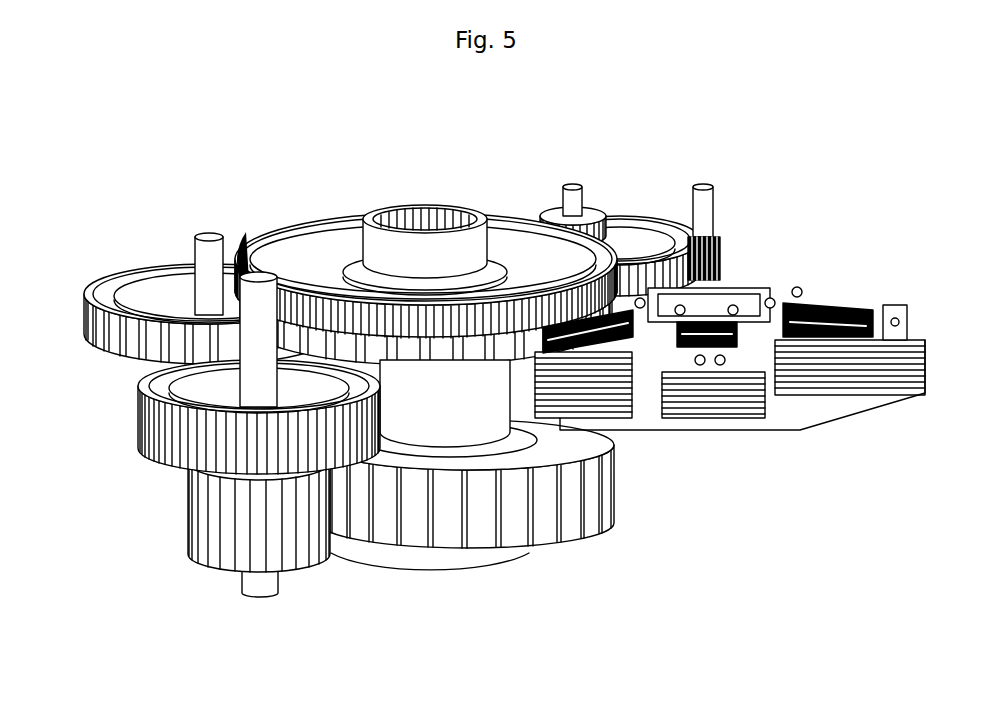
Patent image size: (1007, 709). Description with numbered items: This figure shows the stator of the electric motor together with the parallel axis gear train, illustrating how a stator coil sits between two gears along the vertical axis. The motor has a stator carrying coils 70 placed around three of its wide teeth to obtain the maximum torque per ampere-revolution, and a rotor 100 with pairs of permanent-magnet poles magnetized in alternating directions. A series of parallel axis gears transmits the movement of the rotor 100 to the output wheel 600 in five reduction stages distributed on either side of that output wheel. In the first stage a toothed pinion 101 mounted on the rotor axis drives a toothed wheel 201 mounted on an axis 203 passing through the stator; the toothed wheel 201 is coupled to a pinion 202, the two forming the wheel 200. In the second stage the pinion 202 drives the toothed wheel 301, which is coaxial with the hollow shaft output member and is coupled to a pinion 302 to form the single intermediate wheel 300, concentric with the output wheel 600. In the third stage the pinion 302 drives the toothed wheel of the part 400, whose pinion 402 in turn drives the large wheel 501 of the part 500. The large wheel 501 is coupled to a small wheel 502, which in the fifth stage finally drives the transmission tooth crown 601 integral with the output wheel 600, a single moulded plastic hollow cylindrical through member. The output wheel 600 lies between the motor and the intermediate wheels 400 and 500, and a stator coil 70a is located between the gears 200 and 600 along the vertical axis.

The coils 70 is at (803, 327).
The stator coil 70a is at (592, 353).
The rotor 100 is at (735, 300).
The toothed pinion 101 is at (720, 243).
The wheel 200 is at (596, 192).
The toothed wheel 201 is at (620, 213).
The pinion 202 is at (593, 207).
The axis 203 is at (563, 197).
The intermediate wheel 300 is at (420, 248).
The toothed wheel 301 is at (518, 217).
The pinion 302 is at (327, 320).
The intermediate wheel 400 is at (180, 263).
The pinion 402 is at (147, 353).
The intermediate wheel 500 is at (199, 434).
The large wheel 501 is at (190, 450).
The small wheel 502 is at (210, 535).
The output wheel 600 is at (478, 555).
The transmission tooth crown 601 is at (375, 528).